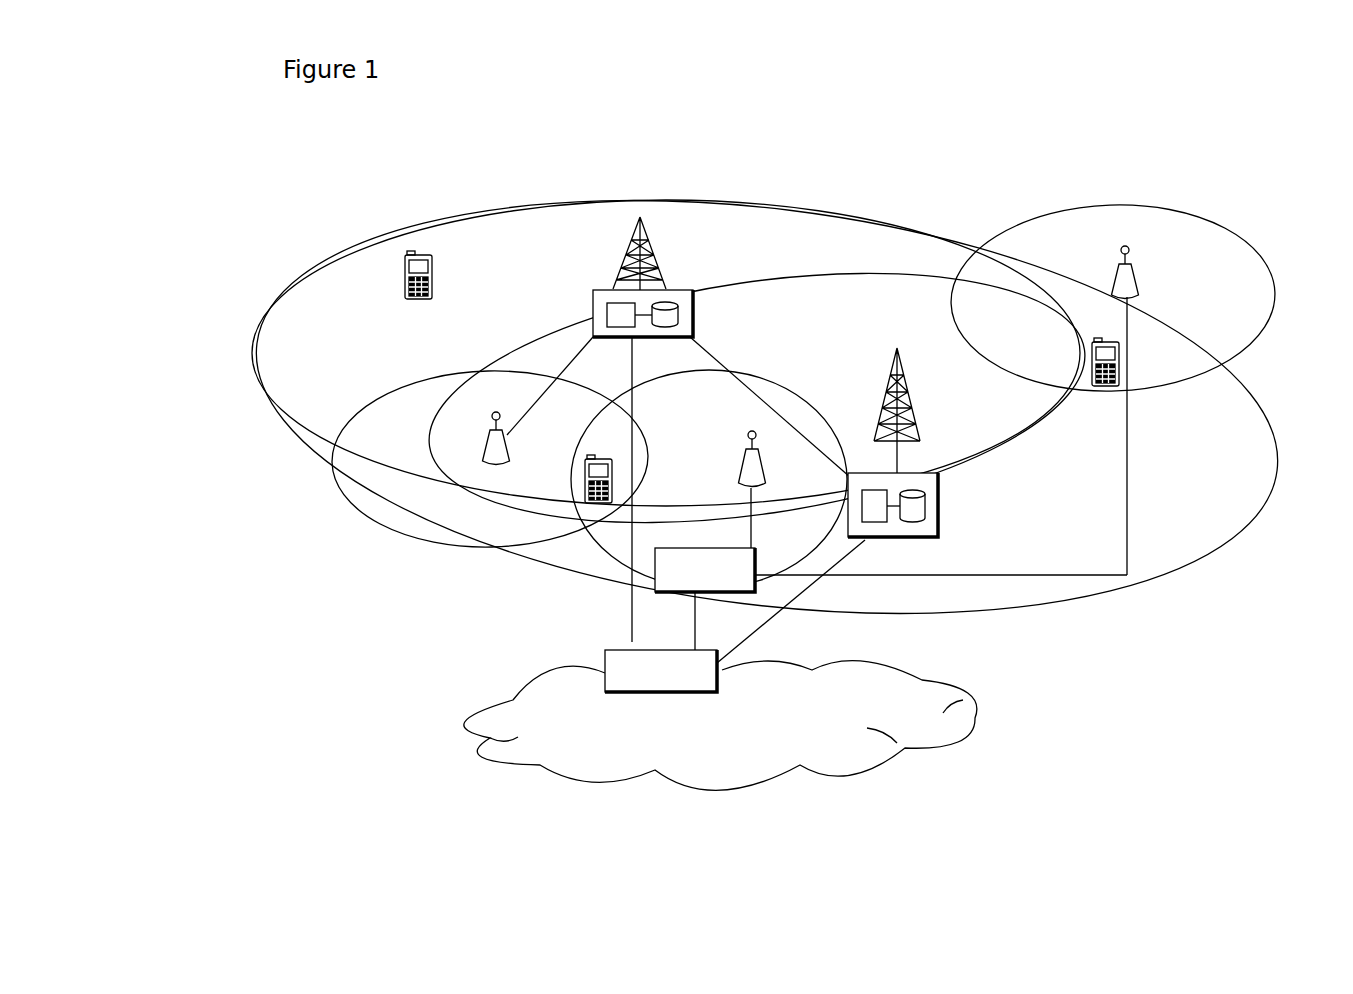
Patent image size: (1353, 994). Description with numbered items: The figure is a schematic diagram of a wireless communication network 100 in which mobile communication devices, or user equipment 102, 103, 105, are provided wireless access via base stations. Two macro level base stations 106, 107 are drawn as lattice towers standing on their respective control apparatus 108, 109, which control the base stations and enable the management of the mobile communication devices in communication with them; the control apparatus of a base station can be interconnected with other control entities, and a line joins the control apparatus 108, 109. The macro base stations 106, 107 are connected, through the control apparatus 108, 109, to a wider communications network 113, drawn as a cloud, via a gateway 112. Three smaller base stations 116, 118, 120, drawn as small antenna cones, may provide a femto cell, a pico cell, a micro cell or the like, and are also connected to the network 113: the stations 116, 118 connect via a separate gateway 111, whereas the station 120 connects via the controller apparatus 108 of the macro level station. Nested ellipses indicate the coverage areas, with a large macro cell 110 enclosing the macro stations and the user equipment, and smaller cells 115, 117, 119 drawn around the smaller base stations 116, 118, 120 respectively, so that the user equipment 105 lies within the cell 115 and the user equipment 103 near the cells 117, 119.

The wireless communication system 100 is at (340, 243).
The user equipment 102 is at (403, 290).
The user equipment 103 is at (585, 483).
The user equipment 105 is at (1106, 388).
The macro level base station 106 is at (623, 283).
The macro level base station 107 is at (913, 410).
The control apparatus 108 is at (593, 305).
The control apparatus 109 is at (930, 527).
The macro cell 110 is at (1183, 567).
The gateway 111 is at (662, 575).
The gateway 112 is at (608, 650).
The communications network 113 is at (538, 702).
The small cell 115 is at (1248, 227).
The smaller base station 116 is at (1113, 275).
The small cell 117 is at (780, 377).
The smaller base station 118 is at (750, 477).
The small cell 119 is at (408, 528).
The smaller base station 120 is at (483, 442).